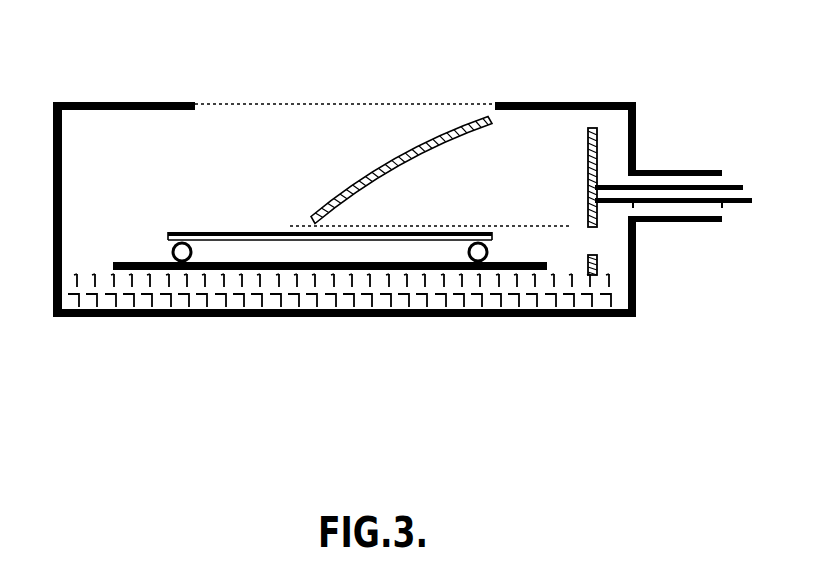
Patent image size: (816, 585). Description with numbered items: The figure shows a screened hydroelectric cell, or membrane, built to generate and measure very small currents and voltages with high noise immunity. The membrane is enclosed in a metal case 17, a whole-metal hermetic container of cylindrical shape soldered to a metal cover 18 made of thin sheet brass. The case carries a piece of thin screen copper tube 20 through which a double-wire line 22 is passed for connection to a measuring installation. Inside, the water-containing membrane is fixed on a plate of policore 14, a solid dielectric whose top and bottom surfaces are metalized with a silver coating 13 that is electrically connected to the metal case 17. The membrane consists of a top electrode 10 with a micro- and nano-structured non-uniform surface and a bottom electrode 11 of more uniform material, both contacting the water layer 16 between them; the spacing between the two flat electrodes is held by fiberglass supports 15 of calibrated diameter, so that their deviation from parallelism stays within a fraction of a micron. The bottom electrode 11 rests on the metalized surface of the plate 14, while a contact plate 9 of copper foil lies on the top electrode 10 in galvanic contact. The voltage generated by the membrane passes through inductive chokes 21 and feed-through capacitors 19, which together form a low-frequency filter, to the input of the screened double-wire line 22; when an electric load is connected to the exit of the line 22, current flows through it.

The contact plate made of copper foil 9 is at (303, 222).
The top electrode 10 is at (242, 240).
The bottom electrode 11 is at (362, 265).
The silver coating 13 is at (275, 280).
The plate of policore 14 is at (512, 295).
The fiberglass supports 15 is at (447, 285).
The water layer 16 is at (253, 243).
The metal case 17 is at (132, 101).
The metal cover 18 is at (380, 103).
The feed-through capacitors 19 is at (569, 101).
The screen copper tube 20 is at (703, 168).
The inductive chokes 21 is at (425, 140).
The double-wire line 22 is at (748, 203).